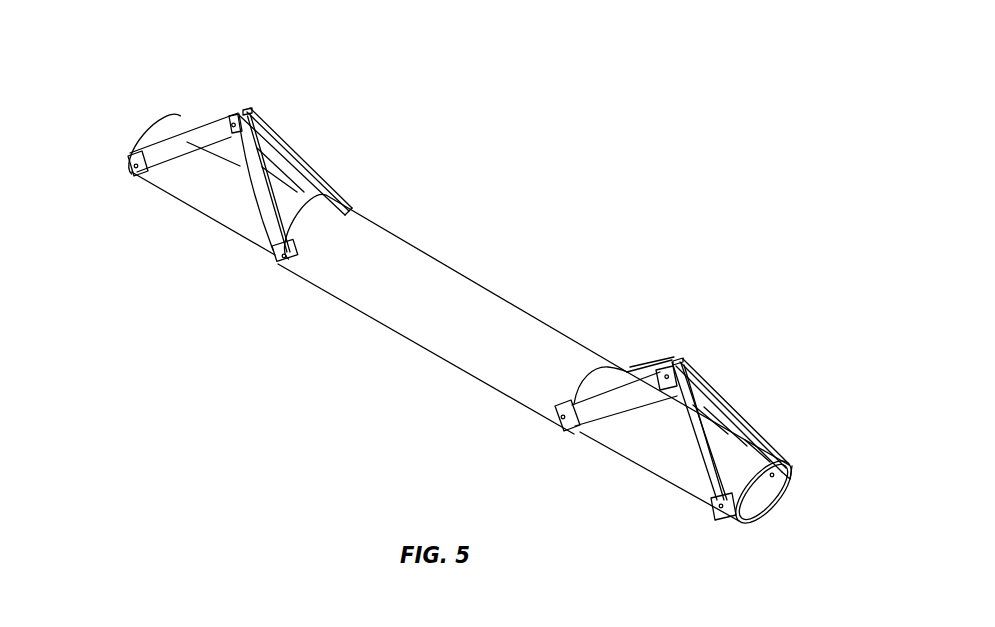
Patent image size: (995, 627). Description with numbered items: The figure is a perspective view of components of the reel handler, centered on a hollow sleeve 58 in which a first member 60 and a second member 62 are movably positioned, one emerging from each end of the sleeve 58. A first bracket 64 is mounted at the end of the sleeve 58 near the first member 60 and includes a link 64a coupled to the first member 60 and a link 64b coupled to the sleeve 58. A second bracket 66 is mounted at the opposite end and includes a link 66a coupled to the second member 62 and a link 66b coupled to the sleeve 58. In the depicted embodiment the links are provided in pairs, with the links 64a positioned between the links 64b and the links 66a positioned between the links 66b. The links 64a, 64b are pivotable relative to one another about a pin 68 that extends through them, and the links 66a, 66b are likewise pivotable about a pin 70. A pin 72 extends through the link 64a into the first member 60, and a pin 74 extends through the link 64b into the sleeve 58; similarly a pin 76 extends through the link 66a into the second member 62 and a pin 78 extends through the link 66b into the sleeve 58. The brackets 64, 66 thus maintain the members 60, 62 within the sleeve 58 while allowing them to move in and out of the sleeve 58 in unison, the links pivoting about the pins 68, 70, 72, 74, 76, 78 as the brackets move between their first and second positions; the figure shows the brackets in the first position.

The hollow sleeve 58 is at (426, 280).
The first member 60 is at (660, 456).
The second member 62 is at (240, 220).
The first bracket 64 is at (690, 352).
The link 64a is at (717, 414).
The link 64b is at (620, 392).
The second bracket 66 is at (253, 105).
The link 66a is at (187, 146).
The link 66b is at (288, 167).
The pin 68 is at (657, 383).
The pin 70 is at (236, 137).
The pin 72 is at (718, 509).
The pin 74 is at (561, 419).
The pin 76 is at (134, 167).
The pin 78 is at (283, 258).